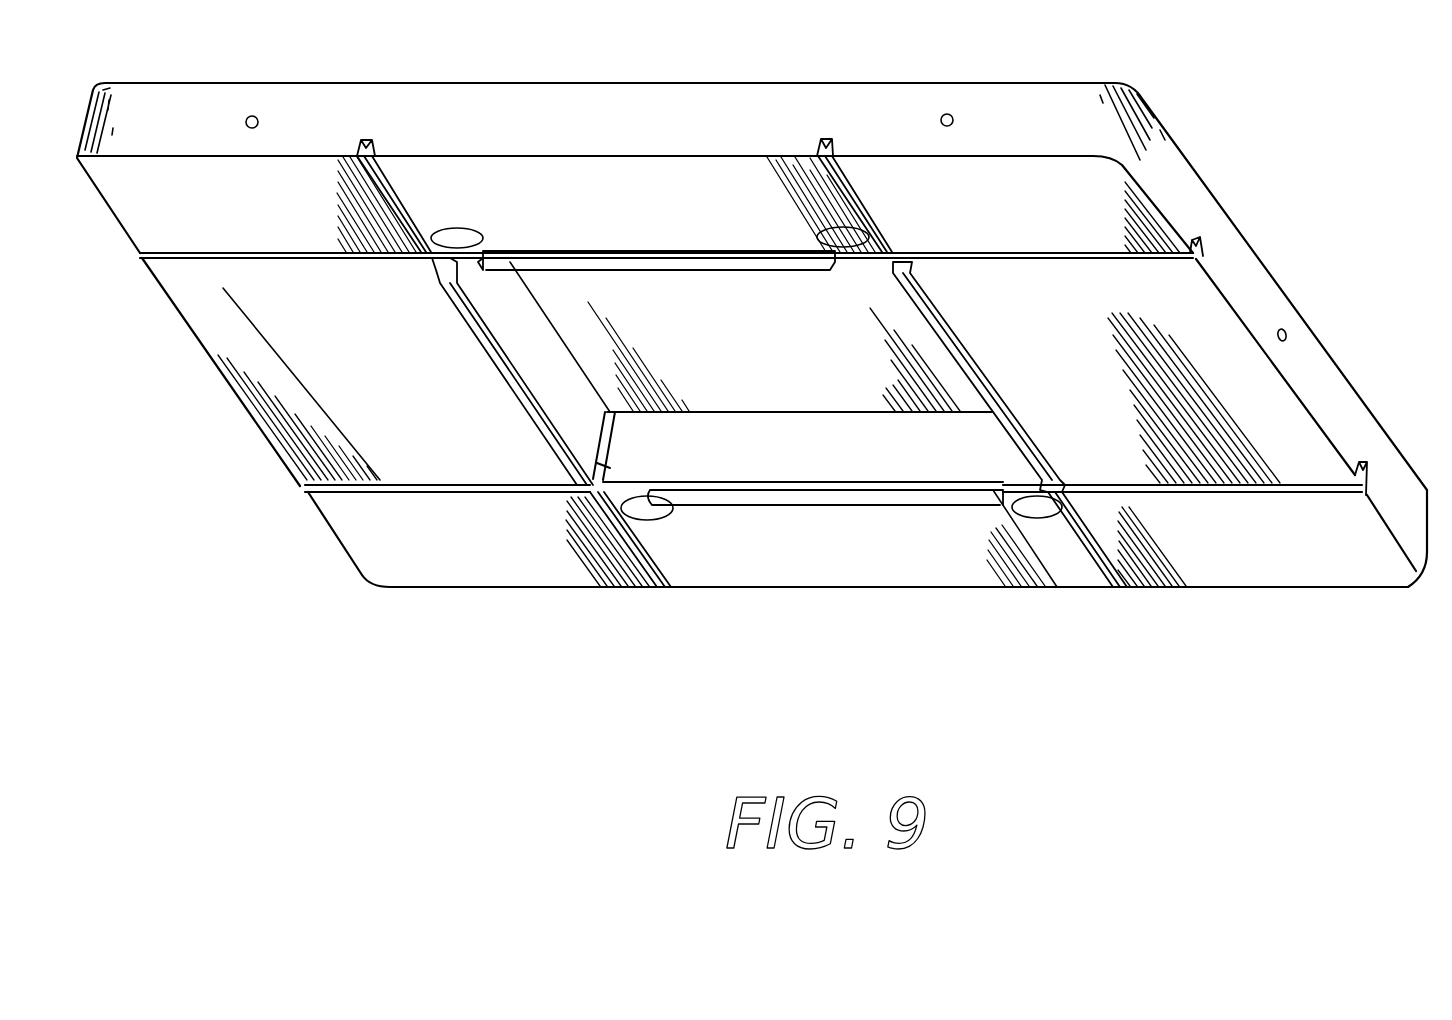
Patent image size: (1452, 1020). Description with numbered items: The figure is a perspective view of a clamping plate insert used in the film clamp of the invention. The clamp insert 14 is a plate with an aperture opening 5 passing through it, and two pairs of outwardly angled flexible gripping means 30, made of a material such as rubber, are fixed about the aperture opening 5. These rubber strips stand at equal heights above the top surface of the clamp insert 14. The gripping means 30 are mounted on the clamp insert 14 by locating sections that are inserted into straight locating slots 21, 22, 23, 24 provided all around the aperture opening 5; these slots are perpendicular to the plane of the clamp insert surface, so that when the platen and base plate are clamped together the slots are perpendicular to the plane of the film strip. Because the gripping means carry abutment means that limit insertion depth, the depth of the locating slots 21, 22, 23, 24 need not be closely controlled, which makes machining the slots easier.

The aperture opening 5 is at (748, 393).
The clamp insert 14 is at (447, 578).
The locating slot 21 is at (368, 140).
The locating slot 22 is at (826, 139).
The locating slot 23 is at (1195, 240).
The locating slot 24 is at (1362, 465).
The flexible gripping means 30 is at (612, 252).